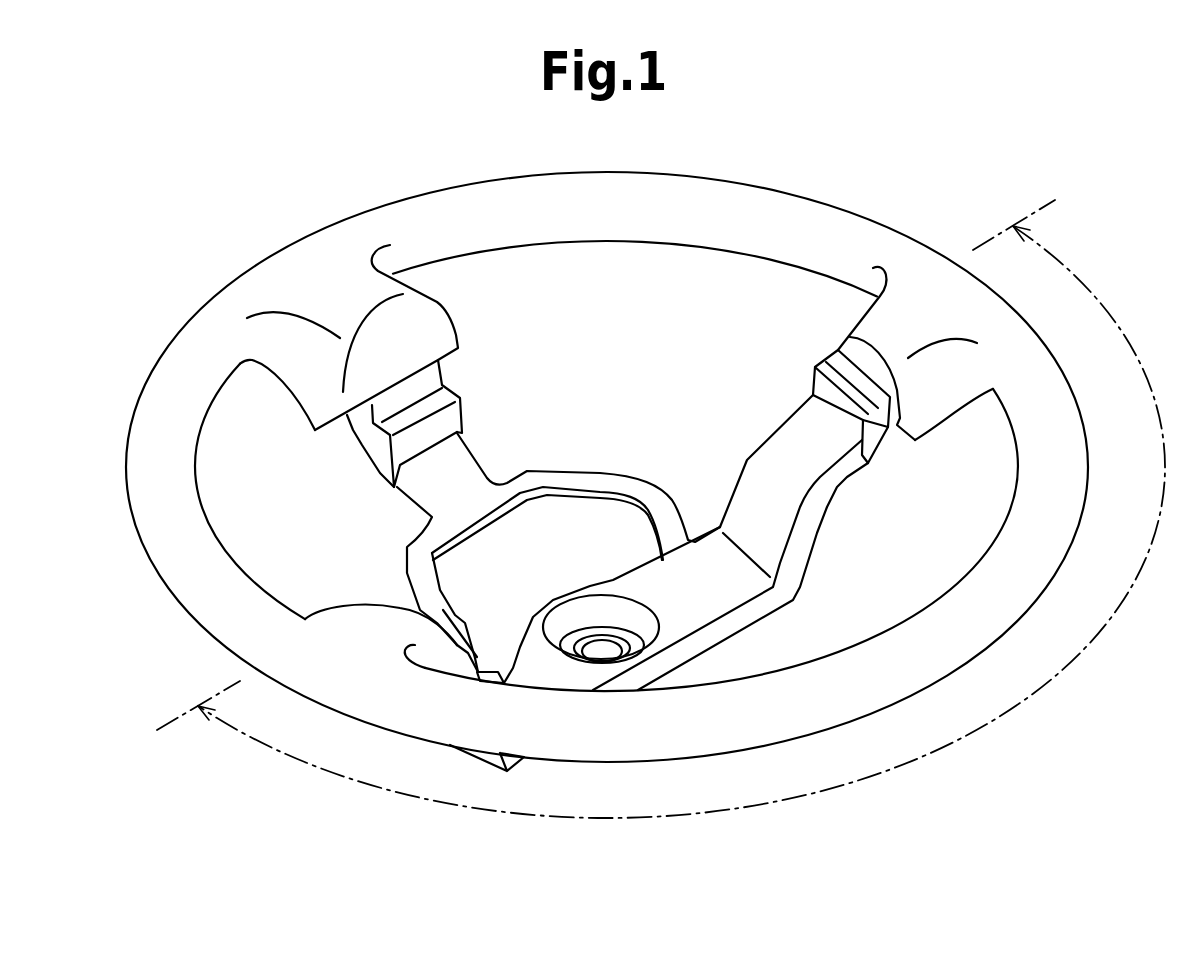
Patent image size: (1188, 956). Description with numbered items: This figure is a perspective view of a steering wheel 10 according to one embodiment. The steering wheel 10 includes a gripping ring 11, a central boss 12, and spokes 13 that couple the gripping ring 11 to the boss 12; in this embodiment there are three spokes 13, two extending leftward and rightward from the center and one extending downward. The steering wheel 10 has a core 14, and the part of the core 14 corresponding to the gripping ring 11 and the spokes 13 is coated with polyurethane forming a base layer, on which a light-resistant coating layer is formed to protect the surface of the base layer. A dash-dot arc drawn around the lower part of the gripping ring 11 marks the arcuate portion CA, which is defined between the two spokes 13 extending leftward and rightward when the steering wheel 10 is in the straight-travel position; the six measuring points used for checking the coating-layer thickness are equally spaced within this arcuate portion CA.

The steering wheel 10 is at (872, 191).
The gripping ring 11 is at (1047, 573).
The boss 12 is at (640, 638).
The spokes 13 is at (438, 303).
The core 14 is at (748, 460).
The arcuate portion CA is at (905, 770).